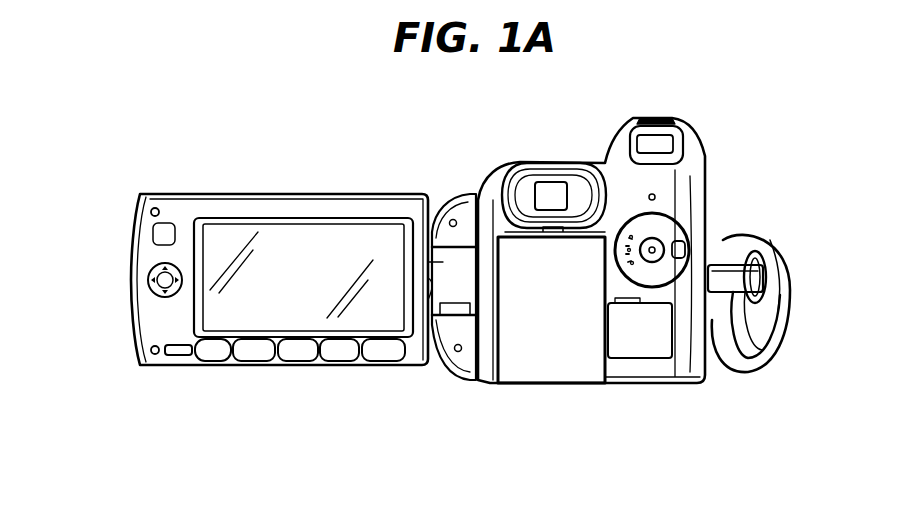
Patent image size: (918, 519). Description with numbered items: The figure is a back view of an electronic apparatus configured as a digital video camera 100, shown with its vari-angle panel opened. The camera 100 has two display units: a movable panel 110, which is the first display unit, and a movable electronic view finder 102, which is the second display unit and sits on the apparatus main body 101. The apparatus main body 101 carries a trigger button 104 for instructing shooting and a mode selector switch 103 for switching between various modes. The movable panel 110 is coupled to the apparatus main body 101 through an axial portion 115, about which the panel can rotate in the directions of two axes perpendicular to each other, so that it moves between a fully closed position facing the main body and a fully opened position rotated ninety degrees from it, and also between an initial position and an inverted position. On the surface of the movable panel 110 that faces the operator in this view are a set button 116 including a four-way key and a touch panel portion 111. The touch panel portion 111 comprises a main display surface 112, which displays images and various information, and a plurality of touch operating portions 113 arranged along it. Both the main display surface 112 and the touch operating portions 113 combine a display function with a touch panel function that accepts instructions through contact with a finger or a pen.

The camera 100 is at (289, 96).
The apparatus main body 101 is at (483, 377).
The electronic view finder 102 is at (566, 183).
The mode selector switch 103 is at (672, 235).
The trigger button 104 is at (655, 243).
The movable panel 110 is at (183, 191).
The touch panel portion 111 is at (290, 446).
The main display surface 112 is at (213, 307).
The touch operating portions 113 is at (218, 357).
The axial portion 115 is at (445, 267).
The set button 116 is at (148, 271).